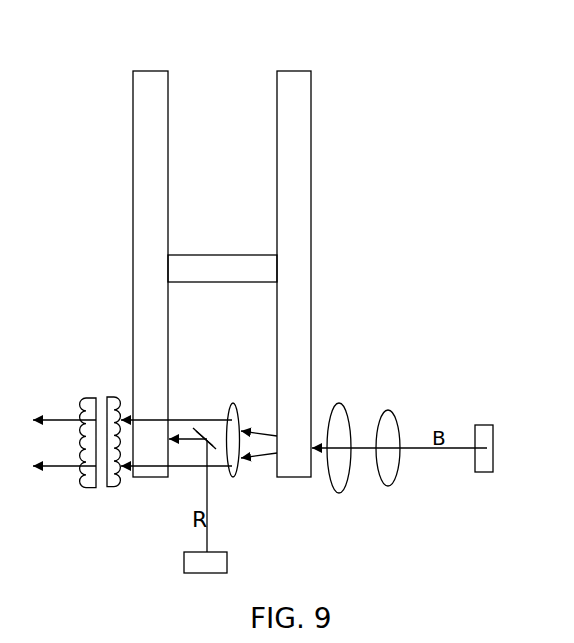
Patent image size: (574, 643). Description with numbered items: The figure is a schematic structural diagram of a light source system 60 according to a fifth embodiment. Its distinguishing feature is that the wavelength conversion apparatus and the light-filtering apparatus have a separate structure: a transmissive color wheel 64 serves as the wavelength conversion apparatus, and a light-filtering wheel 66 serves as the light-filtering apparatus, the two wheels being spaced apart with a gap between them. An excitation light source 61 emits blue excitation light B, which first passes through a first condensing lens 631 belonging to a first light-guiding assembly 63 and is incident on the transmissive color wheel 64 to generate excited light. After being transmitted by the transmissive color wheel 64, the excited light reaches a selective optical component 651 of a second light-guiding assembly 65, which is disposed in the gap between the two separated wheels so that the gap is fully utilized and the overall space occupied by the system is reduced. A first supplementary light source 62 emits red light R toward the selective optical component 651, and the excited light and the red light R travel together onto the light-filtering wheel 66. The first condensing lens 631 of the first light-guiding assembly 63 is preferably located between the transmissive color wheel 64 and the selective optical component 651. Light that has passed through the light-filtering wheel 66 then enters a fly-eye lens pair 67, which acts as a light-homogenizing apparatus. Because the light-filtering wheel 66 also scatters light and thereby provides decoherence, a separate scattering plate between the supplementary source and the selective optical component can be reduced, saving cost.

The light source system 60 is at (222, 153).
The light-filtering wheel 66 is at (170, 85).
The transmissive color wheel 64 is at (312, 85).
The fly-eye lens pair 67 is at (81, 399).
The first condensing lens 631 is at (232, 404).
The first light-guiding assembly 63 is at (364, 400).
The excitation light source 61 is at (494, 430).
The second light-guiding assembly 65 is at (216, 470).
The selective optical component 651 is at (203, 441).
The first supplementary light source 62 is at (183, 563).